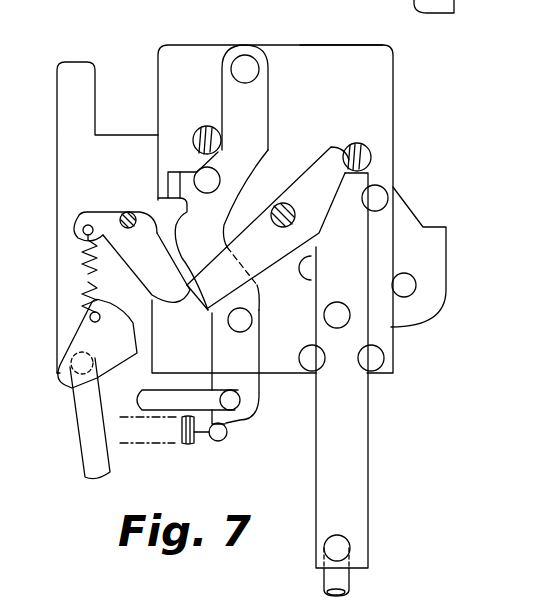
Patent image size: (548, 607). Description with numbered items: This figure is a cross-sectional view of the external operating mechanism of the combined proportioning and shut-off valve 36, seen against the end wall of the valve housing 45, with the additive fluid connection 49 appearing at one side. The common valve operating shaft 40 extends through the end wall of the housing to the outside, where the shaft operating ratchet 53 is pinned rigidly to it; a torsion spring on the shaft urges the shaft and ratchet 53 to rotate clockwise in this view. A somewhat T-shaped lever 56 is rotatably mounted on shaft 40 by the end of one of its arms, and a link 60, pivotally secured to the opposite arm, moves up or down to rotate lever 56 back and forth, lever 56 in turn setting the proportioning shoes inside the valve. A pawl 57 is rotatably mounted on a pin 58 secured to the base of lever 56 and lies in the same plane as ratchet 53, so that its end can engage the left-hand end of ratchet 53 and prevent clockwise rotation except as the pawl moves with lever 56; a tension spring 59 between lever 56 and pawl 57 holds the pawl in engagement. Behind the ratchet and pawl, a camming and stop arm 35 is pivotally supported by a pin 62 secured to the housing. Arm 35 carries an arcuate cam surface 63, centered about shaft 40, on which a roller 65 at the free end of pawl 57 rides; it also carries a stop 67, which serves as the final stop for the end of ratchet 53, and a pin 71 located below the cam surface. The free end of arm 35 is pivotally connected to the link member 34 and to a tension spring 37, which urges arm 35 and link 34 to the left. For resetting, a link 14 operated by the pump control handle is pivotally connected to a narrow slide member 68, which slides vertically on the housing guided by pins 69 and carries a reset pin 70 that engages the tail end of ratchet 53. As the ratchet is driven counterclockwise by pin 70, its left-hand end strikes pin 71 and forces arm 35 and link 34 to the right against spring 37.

The link 14 is at (350, 583).
The link member 34 is at (162, 402).
The camming and stop arm 35 is at (258, 392).
The combined proportioning and shut-off valve 36 is at (406, 96).
The tension spring 37 is at (185, 443).
The shaft 40 is at (287, 213).
The valve housing 45 is at (331, 44).
The connection 49 is at (55, 166).
The shaft operating ratchet 53 is at (307, 158).
The T-shaped lever 56 is at (82, 342).
The pawl 57 is at (110, 198).
The pin 58 is at (130, 212).
The tension spring 59 is at (82, 275).
The link 60 is at (88, 433).
The pin 62 is at (259, 70).
The cam surface 63 is at (182, 253).
The roller 65 is at (173, 172).
The stop 67 is at (210, 181).
The slide member 68 is at (372, 250).
The pins 69 is at (374, 358).
The reset pin 70 is at (338, 306).
The pin 71 is at (242, 320).